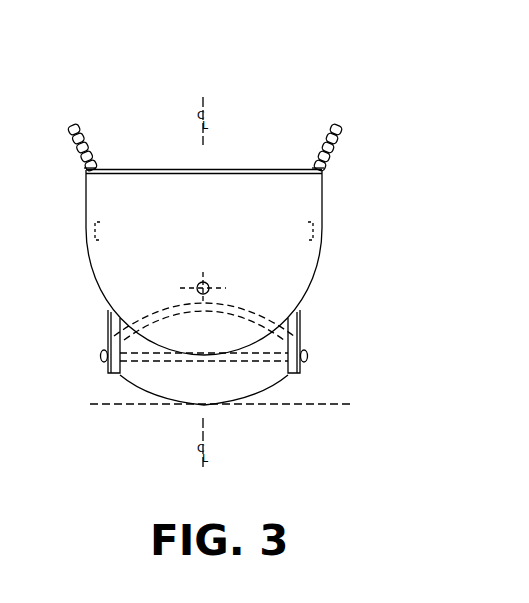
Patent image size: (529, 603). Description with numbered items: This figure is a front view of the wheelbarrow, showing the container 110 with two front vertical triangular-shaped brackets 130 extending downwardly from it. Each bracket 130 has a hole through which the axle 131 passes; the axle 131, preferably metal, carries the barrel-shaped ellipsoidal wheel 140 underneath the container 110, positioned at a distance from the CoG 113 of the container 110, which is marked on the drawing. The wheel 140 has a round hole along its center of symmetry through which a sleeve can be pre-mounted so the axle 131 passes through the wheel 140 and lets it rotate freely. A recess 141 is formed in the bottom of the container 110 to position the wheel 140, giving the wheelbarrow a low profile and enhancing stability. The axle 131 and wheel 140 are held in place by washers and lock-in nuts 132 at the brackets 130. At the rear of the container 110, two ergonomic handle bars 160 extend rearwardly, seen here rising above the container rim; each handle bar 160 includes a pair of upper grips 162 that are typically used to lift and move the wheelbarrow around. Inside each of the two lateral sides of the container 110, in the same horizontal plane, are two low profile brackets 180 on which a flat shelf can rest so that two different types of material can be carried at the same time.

The container 110 is at (323, 191).
The CoG 113 is at (216, 280).
The vertical triangular-shaped bracket 130 is at (108, 333).
The axle 131 is at (155, 372).
The washers and lock-in nuts 132 is at (102, 358).
The barrel-shaped ellipsoidal wheel 140 is at (266, 390).
The recess 141 is at (255, 313).
The ergonomic handle bar 160 is at (70, 122).
The upper grips 162 is at (89, 150).
The low profile bracket 180 is at (84, 231).